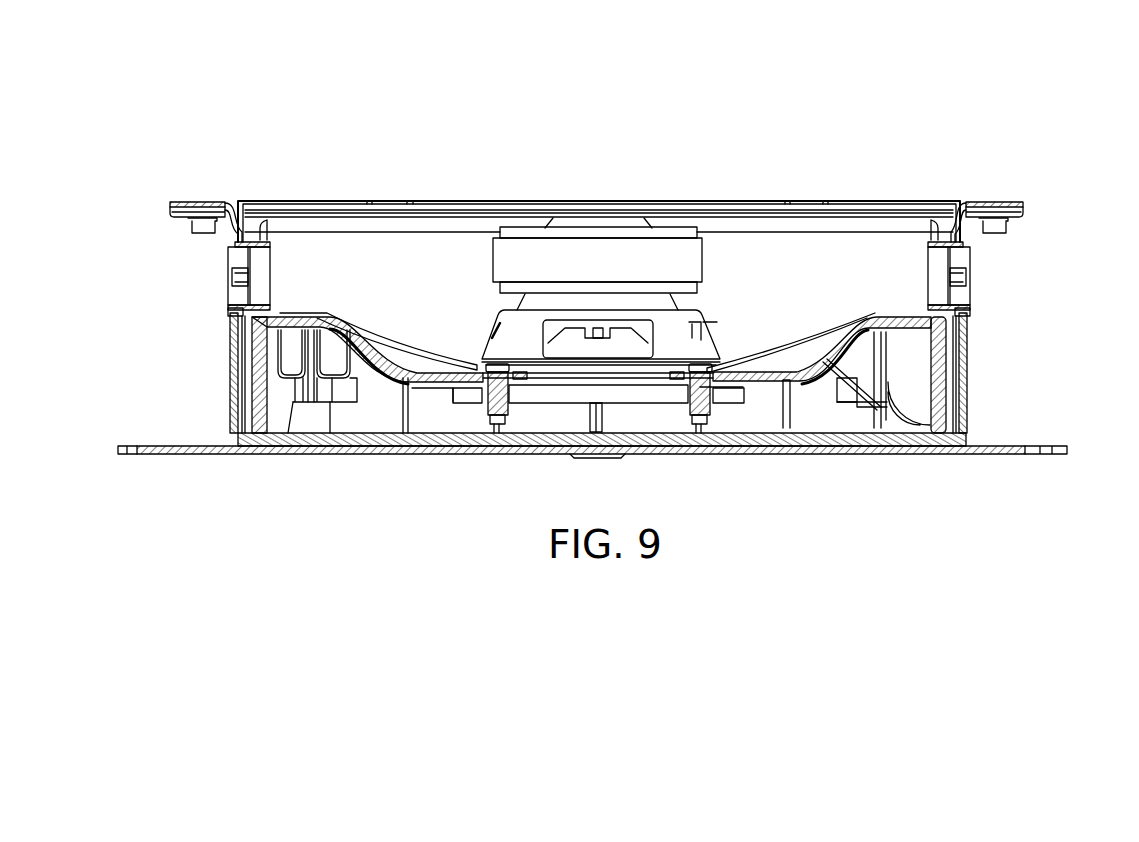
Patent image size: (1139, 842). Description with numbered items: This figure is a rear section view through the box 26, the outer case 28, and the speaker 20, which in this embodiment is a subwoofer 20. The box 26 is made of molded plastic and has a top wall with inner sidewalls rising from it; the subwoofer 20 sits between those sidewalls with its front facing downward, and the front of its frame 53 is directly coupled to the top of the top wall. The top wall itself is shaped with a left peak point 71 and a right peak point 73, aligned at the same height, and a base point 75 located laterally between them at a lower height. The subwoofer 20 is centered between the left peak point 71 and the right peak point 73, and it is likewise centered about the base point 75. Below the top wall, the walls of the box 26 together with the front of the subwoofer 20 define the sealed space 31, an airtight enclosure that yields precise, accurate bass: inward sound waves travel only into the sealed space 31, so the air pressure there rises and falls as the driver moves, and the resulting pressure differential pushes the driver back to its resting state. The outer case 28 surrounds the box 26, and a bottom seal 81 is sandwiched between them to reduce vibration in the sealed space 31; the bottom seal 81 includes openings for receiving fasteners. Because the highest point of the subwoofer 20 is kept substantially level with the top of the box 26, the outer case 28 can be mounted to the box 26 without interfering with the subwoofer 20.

The speaker 20 is at (632, 163).
The box 26 is at (917, 88).
The outer case 28 is at (1002, 353).
The sealed space 31 is at (452, 423).
The frame 53 is at (720, 343).
The left peak point 71 is at (289, 315).
The right peak point 73 is at (907, 316).
The base point 75 is at (478, 380).
The bottom seal 81 is at (1052, 446).